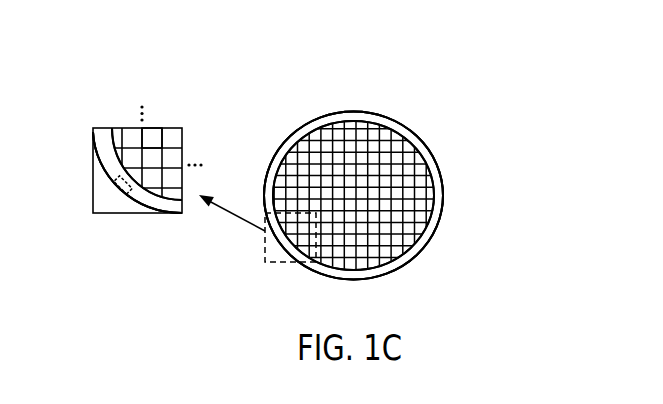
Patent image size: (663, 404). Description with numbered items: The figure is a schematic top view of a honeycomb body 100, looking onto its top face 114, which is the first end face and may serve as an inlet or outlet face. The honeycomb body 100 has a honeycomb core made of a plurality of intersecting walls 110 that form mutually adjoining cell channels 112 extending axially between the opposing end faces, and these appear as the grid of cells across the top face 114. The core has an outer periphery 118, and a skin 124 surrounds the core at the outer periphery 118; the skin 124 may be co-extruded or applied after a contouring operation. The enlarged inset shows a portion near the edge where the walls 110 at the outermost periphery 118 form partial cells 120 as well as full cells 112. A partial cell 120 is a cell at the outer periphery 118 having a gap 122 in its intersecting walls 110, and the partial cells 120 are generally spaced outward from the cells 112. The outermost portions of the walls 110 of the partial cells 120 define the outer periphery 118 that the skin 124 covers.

The honeycomb body 100 is at (416, 109).
The intersecting walls 110 is at (162, 127).
The cell channels 112 is at (151, 137).
The top face 114 is at (412, 195).
The outer periphery 118 is at (407, 259).
The partial cells 120 is at (137, 171).
The gap 122 is at (120, 191).
The skin 124 is at (434, 157).